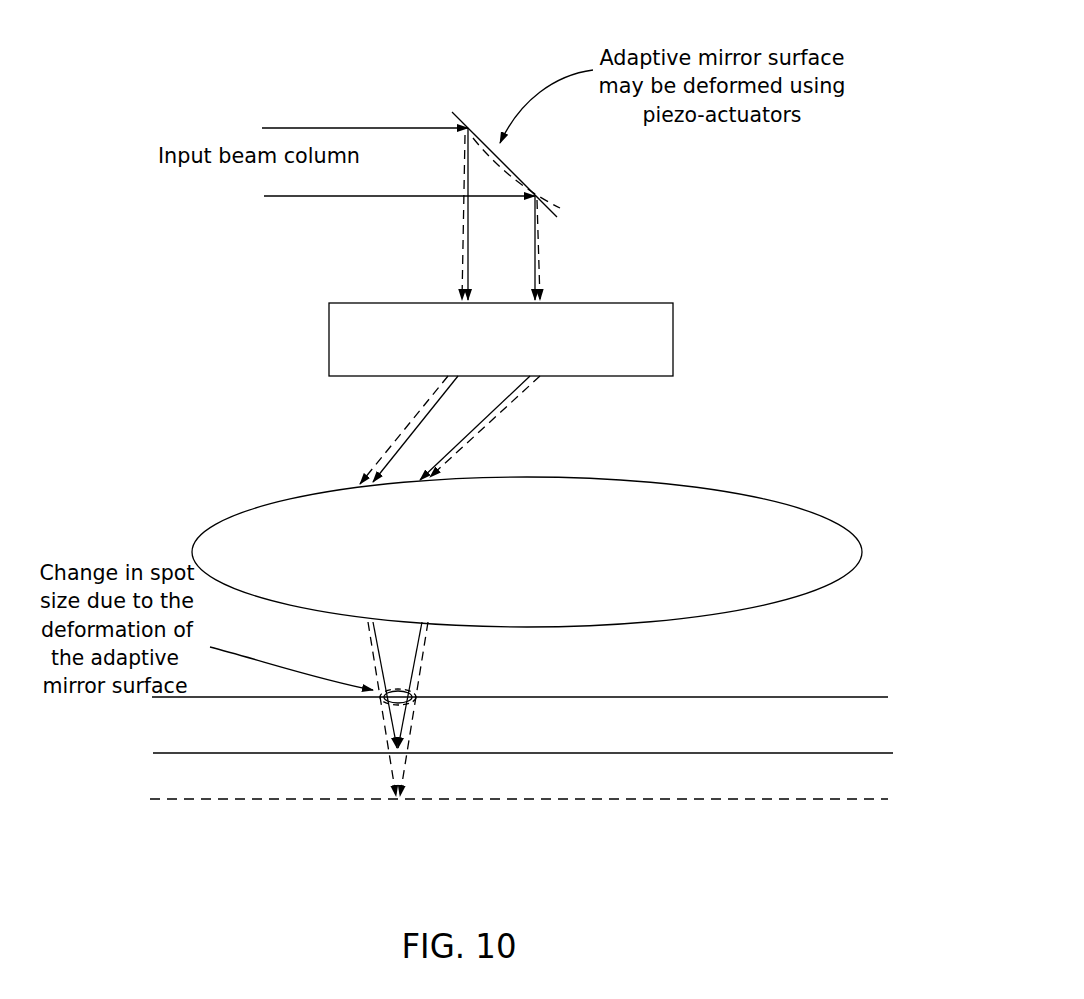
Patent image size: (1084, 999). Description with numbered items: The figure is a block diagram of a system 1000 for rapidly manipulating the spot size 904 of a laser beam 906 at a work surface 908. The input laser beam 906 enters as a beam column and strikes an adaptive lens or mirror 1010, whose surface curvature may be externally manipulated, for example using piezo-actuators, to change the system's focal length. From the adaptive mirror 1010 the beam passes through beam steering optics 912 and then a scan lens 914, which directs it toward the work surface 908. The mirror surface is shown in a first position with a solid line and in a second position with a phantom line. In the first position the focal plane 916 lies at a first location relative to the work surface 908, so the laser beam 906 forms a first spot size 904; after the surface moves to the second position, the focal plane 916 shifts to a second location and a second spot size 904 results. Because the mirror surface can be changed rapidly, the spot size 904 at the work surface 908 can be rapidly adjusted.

The system 1000 is at (312, 73).
The laser beam 906 is at (340, 210).
The adaptive lens or mirror 1010 is at (537, 168).
The beam steering optics 912 is at (673, 332).
The scan lens 914 is at (702, 487).
The spot size 904 is at (437, 690).
The work surface 908 is at (790, 697).
The focal plane 916 is at (193, 799).